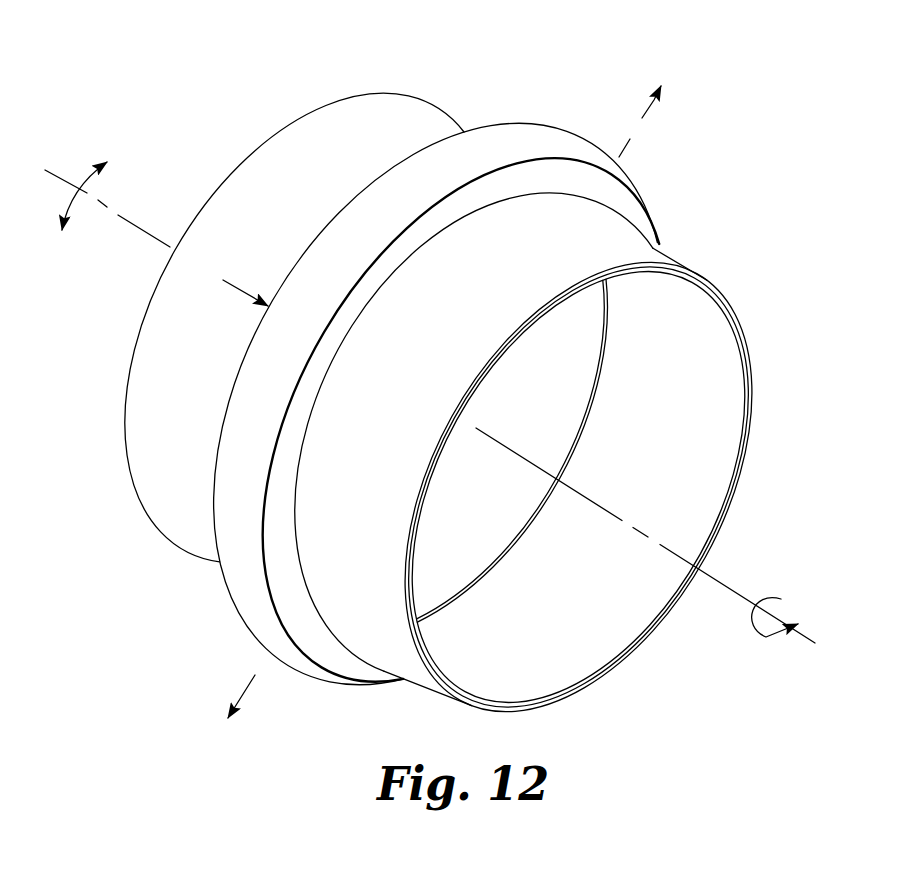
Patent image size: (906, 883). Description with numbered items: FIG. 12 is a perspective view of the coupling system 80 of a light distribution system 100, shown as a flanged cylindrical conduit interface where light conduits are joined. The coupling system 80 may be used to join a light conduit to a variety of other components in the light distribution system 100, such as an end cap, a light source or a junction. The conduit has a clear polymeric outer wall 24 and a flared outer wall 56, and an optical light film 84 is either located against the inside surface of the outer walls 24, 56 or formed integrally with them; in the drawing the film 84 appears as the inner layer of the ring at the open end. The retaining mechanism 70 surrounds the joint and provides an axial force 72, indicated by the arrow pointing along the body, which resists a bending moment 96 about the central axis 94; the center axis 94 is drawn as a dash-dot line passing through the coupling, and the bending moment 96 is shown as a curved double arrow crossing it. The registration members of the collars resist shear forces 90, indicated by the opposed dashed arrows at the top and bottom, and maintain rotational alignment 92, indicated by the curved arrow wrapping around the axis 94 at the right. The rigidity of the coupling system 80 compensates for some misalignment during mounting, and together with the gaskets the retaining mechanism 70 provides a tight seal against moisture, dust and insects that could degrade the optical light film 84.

The light distribution system 100 is at (474, 405).
The outer wall 56 is at (260, 118).
The retaining mechanism 70 is at (543, 137).
The axial force 72 is at (338, 352).
The coupling system 80 is at (246, 620).
The outer wall 24 is at (752, 350).
The optical light film 84 is at (749, 423).
The center axis 94 is at (147, 238).
The bending moment 96 is at (86, 186).
The rotational alignment 92 is at (750, 629).
The shear forces 90 is at (646, 117).